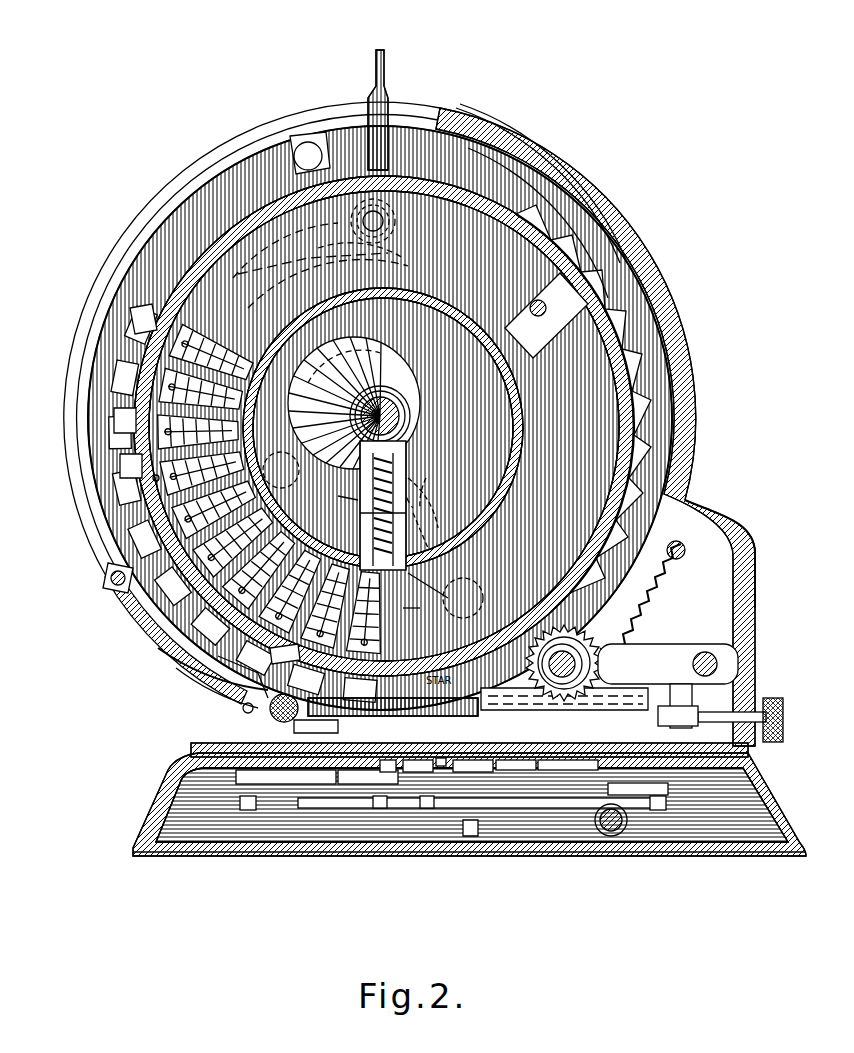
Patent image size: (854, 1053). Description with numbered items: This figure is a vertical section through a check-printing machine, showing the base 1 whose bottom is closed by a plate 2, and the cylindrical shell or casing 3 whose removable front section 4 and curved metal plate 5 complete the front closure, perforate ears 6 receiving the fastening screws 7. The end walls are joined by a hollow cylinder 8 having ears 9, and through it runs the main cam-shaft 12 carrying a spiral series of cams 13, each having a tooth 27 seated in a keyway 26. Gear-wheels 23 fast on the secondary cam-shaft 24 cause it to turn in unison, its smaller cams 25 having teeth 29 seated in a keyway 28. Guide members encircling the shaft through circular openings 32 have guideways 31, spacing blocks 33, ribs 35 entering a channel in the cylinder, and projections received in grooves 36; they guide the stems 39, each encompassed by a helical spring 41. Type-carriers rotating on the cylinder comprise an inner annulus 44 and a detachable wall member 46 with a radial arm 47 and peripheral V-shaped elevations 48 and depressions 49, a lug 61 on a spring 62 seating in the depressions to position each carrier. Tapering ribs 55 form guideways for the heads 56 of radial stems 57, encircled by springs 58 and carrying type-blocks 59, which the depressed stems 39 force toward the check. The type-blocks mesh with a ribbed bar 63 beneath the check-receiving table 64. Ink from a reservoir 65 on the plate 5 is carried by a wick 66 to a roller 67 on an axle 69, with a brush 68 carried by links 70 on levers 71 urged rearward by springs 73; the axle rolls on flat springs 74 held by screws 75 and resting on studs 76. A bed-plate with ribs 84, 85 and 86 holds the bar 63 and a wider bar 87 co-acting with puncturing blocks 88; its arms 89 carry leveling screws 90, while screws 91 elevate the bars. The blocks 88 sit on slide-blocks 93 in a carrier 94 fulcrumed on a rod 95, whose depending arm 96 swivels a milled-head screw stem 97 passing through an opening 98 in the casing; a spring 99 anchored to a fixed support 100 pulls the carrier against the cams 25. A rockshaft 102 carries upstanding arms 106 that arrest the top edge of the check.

The base 1 is at (404, 924).
The plate 2 is at (195, 630).
The shell or casing 3 is at (200, 598).
The front section 4 is at (778, 572).
The curved metal plate 5 is at (160, 648).
The perforate ears 6 is at (292, 130).
The fastening screws 7 is at (306, 138).
The hollow cylinder 8 is at (522, 372).
The ears 9 is at (122, 309).
The main cam-shaft 12 is at (370, 392).
The cams 13 is at (352, 372).
The gear-wheels 23 is at (560, 630).
The secondary cam-shaft 24 is at (547, 650).
The cams 25 is at (568, 645).
The keyway or groove 26 is at (390, 404).
The tooth 27 is at (386, 396).
The groove or keyway 28 is at (547, 660).
The tooth 29 is at (600, 650).
The guideway 31 is at (352, 506).
The circular opening 32 is at (340, 247).
The spacing blocks 33 is at (405, 262).
The ribs or projections 35 is at (404, 480).
The grooves 36 is at (414, 502).
The stems 39 is at (412, 474).
The helical spring 41 is at (362, 478).
The annulus 44 is at (364, 482).
The wall member 46 is at (295, 462).
The radial arm 47 is at (378, 86).
The elevations 48 is at (552, 300).
The depressions 49 is at (628, 420).
The ribs or projections 55 is at (330, 490).
The head or block 56 is at (448, 582).
The radial stems 57 is at (434, 568).
The helical spring 58 is at (410, 606).
The type-block 59 is at (262, 648).
The V-shaped lug 61 is at (542, 192).
The spring 62 is at (493, 130).
The bar 63 is at (378, 694).
The check-receiving table 64 is at (215, 735).
The ink reservoir 65 is at (182, 660).
The wick 66 is at (200, 672).
The roller 67 is at (305, 768).
The brush 68 is at (345, 768).
The shaft or axle 69 is at (286, 720).
The link 70 is at (234, 700).
The levers 71 is at (225, 272).
The springs 73 is at (390, 215).
The flat supporting springs 74 is at (380, 764).
The screws 75 is at (262, 705).
The studs 76 is at (458, 764).
The raised rib 84 is at (367, 796).
The raised rib 85 is at (405, 764).
The raised rib 86 is at (495, 762).
The bar 87 is at (465, 830).
The blocks 88 is at (433, 758).
The arms 89 is at (320, 800).
The adjusting screws 90 is at (652, 802).
The screws 91 is at (415, 800).
The slide-blocks 93 is at (528, 762).
The bracket or carrier 94 is at (668, 686).
The rod 95 is at (712, 656).
The depending arm 96 is at (736, 704).
The screw stem 97 is at (775, 718).
The opening 98 is at (742, 706).
The helical spring 99 is at (652, 585).
The rod or fixed support 100 is at (700, 498).
The rockshaft 102 is at (603, 828).
The upstanding arms 106 is at (635, 776).